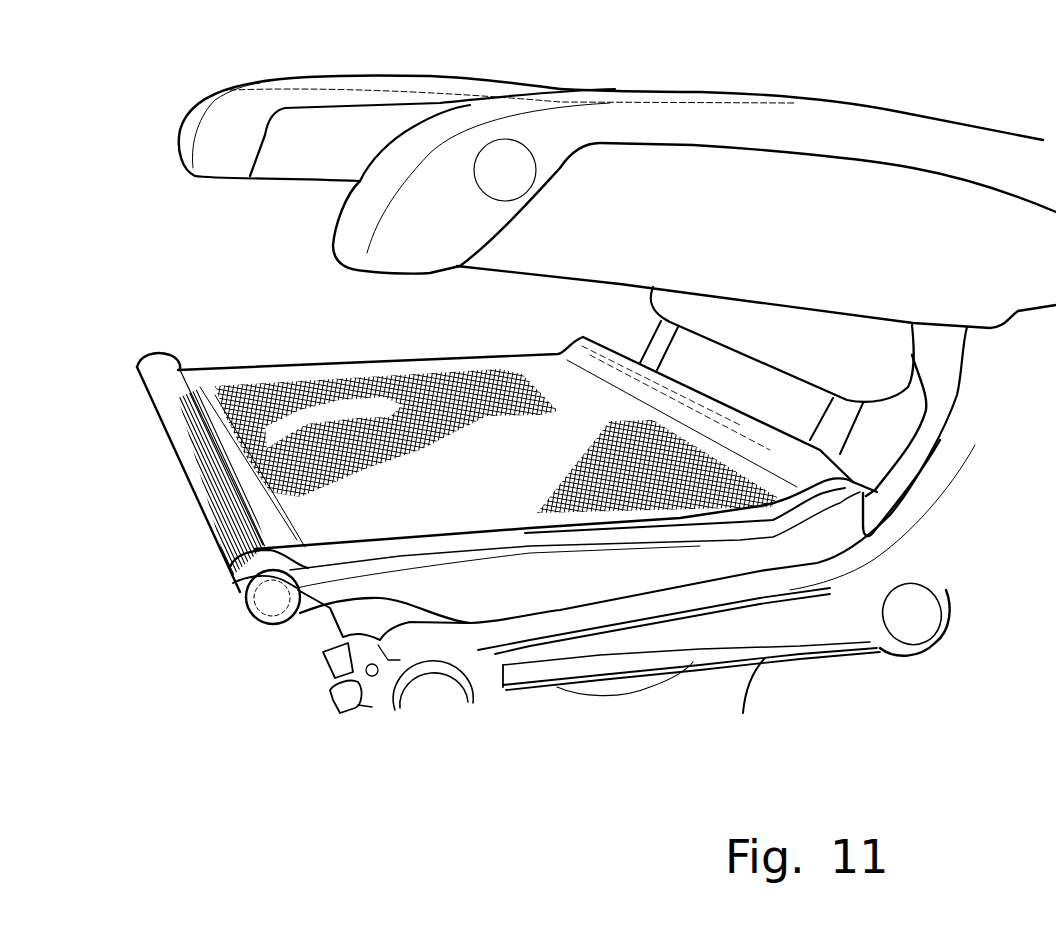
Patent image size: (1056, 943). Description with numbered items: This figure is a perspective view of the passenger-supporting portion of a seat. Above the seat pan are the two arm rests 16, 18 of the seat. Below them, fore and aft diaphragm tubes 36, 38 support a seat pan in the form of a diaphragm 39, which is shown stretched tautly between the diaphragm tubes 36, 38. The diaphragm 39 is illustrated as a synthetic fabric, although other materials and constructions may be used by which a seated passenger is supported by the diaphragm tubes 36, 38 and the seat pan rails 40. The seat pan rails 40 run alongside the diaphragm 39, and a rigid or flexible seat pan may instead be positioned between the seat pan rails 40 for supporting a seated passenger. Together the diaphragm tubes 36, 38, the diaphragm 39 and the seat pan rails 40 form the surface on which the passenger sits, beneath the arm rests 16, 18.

The arm rest 16 is at (237, 127).
The arm rest 18 is at (896, 127).
The fore diaphragm tube 36 is at (267, 607).
The aft diaphragm tube 38 is at (552, 330).
The diaphragm 39 is at (290, 385).
The seat pan rail 40 is at (530, 578).